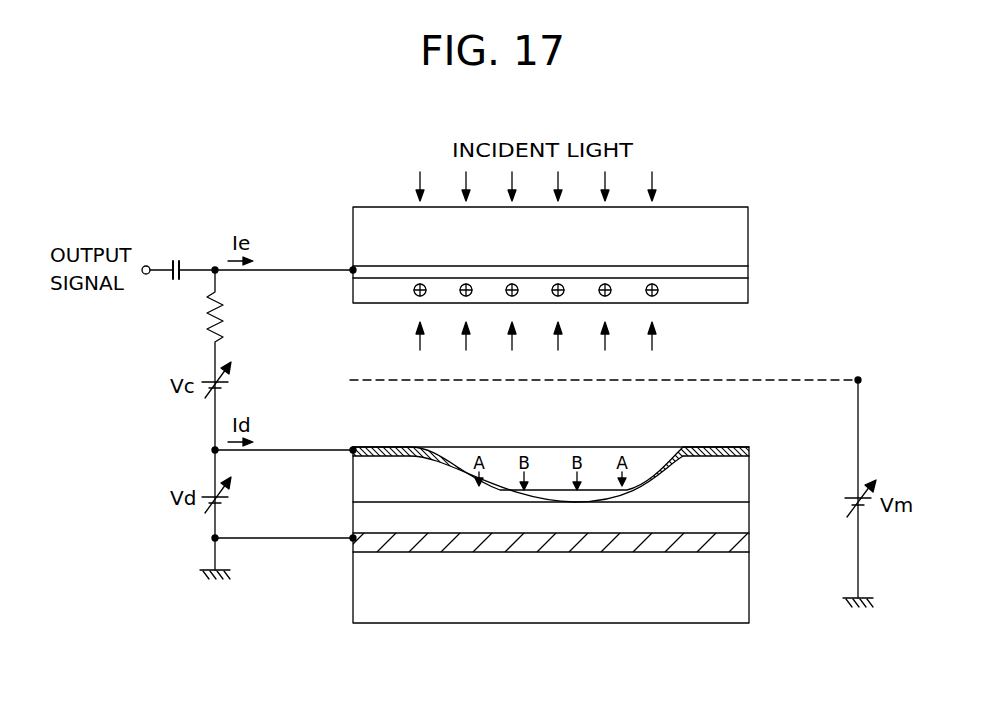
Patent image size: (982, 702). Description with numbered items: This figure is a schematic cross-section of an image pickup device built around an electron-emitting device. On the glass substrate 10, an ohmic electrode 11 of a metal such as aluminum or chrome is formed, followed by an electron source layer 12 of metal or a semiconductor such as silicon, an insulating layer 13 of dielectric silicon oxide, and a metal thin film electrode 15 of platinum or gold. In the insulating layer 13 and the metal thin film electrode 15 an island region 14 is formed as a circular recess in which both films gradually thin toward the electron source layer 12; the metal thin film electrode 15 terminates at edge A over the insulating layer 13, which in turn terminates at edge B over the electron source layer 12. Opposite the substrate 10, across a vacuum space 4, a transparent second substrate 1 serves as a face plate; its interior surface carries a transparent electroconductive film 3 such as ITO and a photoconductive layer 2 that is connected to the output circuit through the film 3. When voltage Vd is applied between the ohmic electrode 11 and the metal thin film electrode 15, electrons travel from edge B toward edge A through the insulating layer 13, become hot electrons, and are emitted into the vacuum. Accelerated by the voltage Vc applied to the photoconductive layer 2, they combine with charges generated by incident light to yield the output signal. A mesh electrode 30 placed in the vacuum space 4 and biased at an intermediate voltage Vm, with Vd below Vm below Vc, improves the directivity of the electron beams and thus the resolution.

The second substrate 1 is at (748, 237).
The photoconductive layer 2 is at (353, 283).
The transparent electroconductive film 3 is at (353, 265).
The vacuum space 4 is at (708, 361).
The glass substrate 10 is at (353, 601).
The ohmic electrode 11 is at (750, 546).
The electron source layer 12 is at (353, 517).
The insulating layer 13 is at (750, 479).
The island region 14 is at (443, 455).
The metal thin film electrode 15 is at (353, 448).
The mesh electrode 30 is at (821, 379).